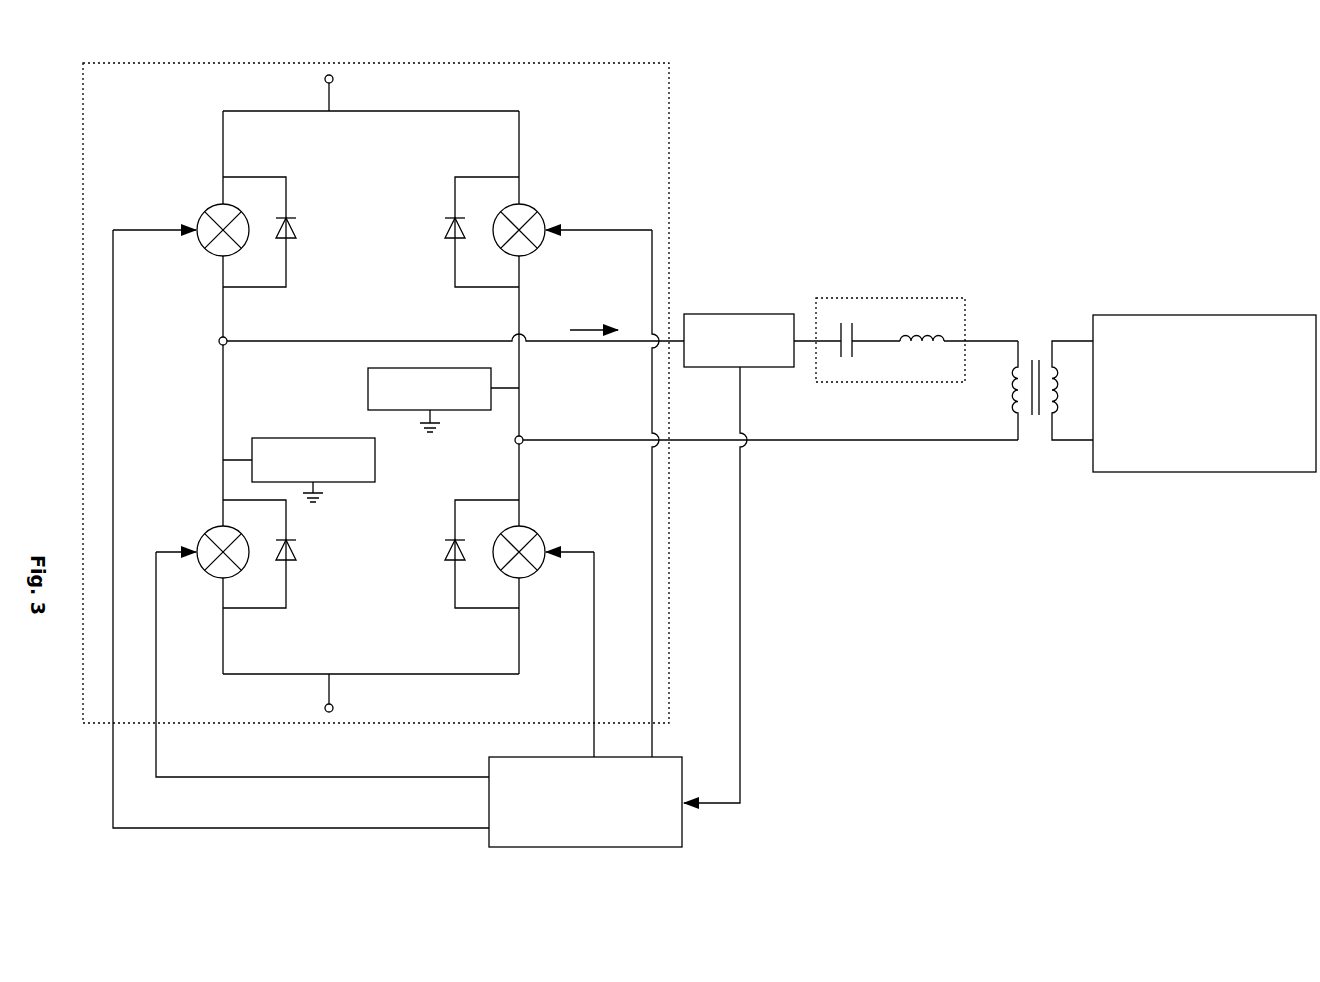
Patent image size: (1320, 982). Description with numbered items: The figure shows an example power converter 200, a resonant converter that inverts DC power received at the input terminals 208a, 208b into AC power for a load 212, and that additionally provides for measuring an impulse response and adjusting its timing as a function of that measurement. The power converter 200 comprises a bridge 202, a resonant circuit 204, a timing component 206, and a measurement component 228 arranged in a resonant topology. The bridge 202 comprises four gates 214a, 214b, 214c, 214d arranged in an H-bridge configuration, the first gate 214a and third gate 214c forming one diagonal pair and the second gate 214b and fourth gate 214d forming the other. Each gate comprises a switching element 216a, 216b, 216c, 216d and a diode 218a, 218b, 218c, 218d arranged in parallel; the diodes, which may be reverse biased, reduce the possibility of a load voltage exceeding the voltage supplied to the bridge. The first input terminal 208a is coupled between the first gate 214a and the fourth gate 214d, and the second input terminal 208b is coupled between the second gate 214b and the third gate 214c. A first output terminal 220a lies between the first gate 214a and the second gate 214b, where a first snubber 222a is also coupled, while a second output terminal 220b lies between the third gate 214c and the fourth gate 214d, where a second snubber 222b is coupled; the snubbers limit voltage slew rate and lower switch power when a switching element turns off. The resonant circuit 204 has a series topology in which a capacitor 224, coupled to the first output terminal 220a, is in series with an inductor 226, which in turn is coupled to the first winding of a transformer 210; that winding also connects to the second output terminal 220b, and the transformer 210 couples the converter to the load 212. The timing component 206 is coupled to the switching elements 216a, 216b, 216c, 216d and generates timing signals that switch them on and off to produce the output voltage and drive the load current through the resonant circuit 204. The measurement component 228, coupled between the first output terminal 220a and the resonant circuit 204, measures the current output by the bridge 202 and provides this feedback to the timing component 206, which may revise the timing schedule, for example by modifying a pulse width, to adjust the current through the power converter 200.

The power converter 200 is at (870, 126).
The bridge 202 is at (377, 63).
The resonant circuit 204 is at (906, 334).
The timing component 206 is at (666, 757).
The first input terminal 208a is at (333, 83).
The second input terminal 208b is at (333, 704).
The transformer 210 is at (1038, 352).
The load 212 is at (1205, 315).
The first gate 214a is at (299, 184).
The second gate 214b is at (299, 572).
The third gate 214c is at (444, 592).
The fourth gate 214d is at (444, 164).
The switching element 216a is at (211, 207).
The switching element 216b is at (211, 529).
The switching element 216c is at (531, 529).
The switching element 216d is at (531, 207).
The diode 218a is at (294, 239).
The diode 218b is at (294, 539).
The diode 218c is at (447, 539).
The diode 218d is at (447, 239).
The first output terminal 220a is at (226, 338).
The second output terminal 220b is at (522, 437).
The first snubber 222a is at (312, 438).
The second snubber 222b is at (428, 368).
The capacitor 224 is at (851, 362).
The inductor 226 is at (928, 348).
The measurement component 228 is at (738, 314).